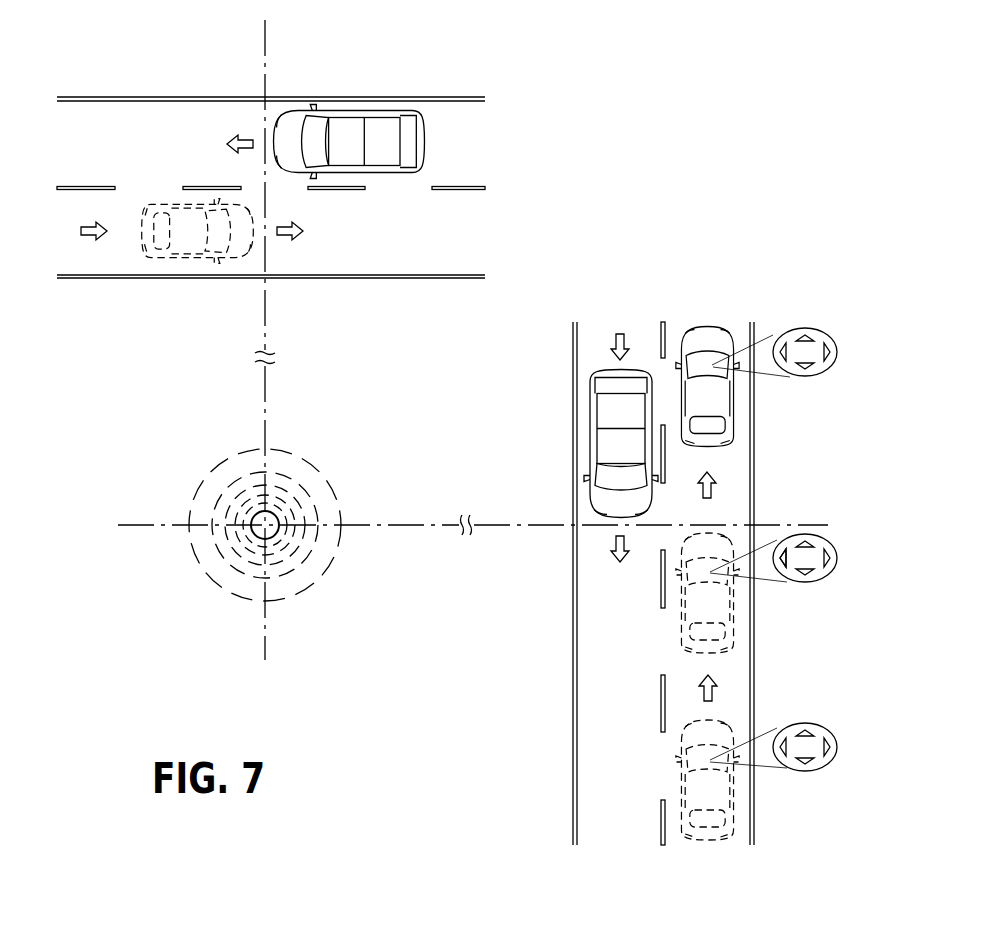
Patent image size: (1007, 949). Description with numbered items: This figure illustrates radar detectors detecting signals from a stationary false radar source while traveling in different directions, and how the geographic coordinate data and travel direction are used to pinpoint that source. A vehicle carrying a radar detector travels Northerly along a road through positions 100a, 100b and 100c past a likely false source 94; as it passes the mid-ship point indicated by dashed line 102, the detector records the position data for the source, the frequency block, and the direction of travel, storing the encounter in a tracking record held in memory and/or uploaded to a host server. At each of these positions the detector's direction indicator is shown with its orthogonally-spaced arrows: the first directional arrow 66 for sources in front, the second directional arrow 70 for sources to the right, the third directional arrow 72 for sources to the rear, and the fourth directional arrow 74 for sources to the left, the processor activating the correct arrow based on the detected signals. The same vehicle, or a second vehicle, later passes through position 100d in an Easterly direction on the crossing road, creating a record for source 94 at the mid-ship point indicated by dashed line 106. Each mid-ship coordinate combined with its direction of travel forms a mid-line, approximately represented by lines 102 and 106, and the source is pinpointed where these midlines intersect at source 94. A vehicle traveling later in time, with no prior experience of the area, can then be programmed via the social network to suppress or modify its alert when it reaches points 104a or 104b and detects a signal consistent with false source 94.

The first directional arrow 66 is at (807, 725).
The second directional arrow 70 is at (828, 554).
The third directional arrow 72 is at (812, 372).
The fourth directional arrow 74 is at (783, 558).
The likely false source 94 is at (270, 530).
The position 100a is at (735, 815).
The position 100b is at (733, 617).
The position 100c is at (737, 417).
The position 100d is at (162, 257).
The dashed line 102 is at (525, 527).
The point 104a is at (590, 423).
The point 104b is at (360, 110).
The dashed line 106 is at (265, 413).